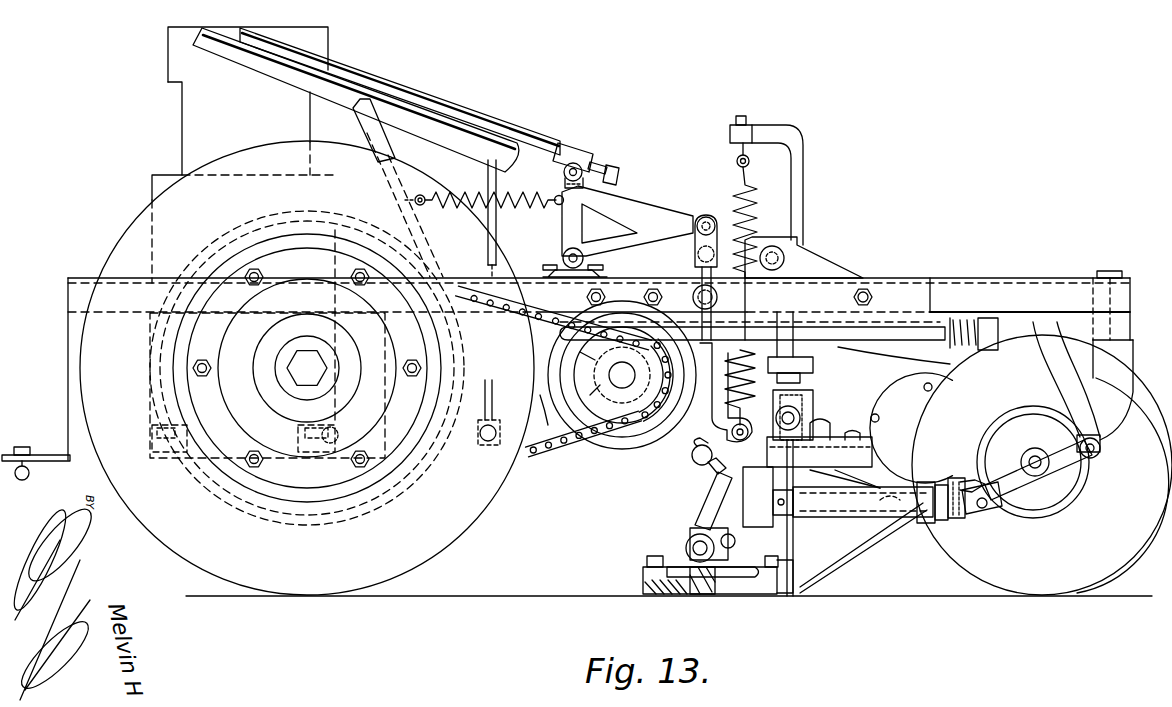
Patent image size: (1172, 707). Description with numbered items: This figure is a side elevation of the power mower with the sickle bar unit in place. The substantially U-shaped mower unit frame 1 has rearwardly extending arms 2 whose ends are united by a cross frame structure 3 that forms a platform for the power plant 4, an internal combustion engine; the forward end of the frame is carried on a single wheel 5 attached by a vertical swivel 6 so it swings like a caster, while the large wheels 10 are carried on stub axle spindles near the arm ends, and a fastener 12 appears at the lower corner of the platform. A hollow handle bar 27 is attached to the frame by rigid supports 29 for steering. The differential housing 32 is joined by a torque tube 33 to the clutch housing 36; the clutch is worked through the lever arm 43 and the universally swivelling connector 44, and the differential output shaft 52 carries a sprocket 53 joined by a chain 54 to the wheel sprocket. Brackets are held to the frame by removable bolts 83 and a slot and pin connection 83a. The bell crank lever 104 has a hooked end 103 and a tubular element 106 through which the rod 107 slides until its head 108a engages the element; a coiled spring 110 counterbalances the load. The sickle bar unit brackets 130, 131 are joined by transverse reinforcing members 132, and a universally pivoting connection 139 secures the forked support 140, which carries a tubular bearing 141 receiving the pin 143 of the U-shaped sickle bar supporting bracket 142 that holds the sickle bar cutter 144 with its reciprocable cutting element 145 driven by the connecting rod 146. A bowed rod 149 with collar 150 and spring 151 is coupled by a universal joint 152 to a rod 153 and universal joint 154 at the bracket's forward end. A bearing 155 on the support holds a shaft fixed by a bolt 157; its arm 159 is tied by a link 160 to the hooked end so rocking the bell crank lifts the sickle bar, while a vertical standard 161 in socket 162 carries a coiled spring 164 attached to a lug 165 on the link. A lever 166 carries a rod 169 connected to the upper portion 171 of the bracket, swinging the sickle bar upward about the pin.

The mower unit frame 1 is at (1050, 278).
The frame arms 2 is at (940, 278).
The cross frame structure 3 is at (42, 455).
The power plant 4 is at (182, 130).
The wheel 5 is at (1110, 564).
The vertical swivel 6 is at (1108, 271).
The wheels 10 is at (412, 560).
The bolt 12 is at (30, 478).
The handle bar 27 is at (340, 100).
The rigid supports 29 is at (384, 146).
The differential housing 32 is at (640, 448).
The torque tube 33 is at (547, 411).
The clutch housing 36 is at (458, 480).
The lever arm 43 is at (482, 432).
The universally swivelling connector 44 is at (496, 220).
The shaft 52 is at (626, 395).
The sprocket 53 is at (612, 385).
The chain 54 is at (557, 455).
The removable bolts 83 is at (863, 288).
The slot and pin connection 83a is at (694, 290).
The hooked end 103 is at (708, 215).
The bell crank lever 104 is at (664, 226).
The tubular element 106 is at (580, 155).
The rod 107 is at (462, 112).
The head 108a is at (612, 165).
The coiled spring 110 is at (525, 196).
The sickle bar unit bracket 130 is at (892, 278).
The sickle bar unit bracket 131 is at (970, 370).
The transverse reinforcing members 132 is at (900, 358).
The universally pivoting connection 139 is at (820, 428).
The forked support 140 is at (868, 482).
The tubular bearing 141 is at (868, 502).
The sickle bar supporting bracket 142 is at (868, 555).
The pin 143 is at (905, 503).
The sickle bar cutter 144 is at (660, 594).
The reciprocable cutting element 145 is at (700, 594).
The connecting rod 146 is at (700, 510).
The bowed rod 149 is at (1076, 366).
The collar 150 is at (990, 320).
The spring 151 is at (962, 318).
The universal joint 152 is at (1056, 472).
The rod 153 is at (1020, 466).
The universal joint 154 is at (968, 512).
The bearing 155 is at (872, 450).
The bolt 157 is at (853, 430).
The arm 159 is at (712, 472).
The link 160 is at (706, 425).
The vertical standard 161 is at (804, 180).
The socket 162 is at (813, 366).
The coiled spring 164 is at (760, 222).
The lug 165 is at (694, 462).
The lever 166 is at (782, 340).
The rod 169 is at (800, 410).
The upper portion 171 is at (782, 470).